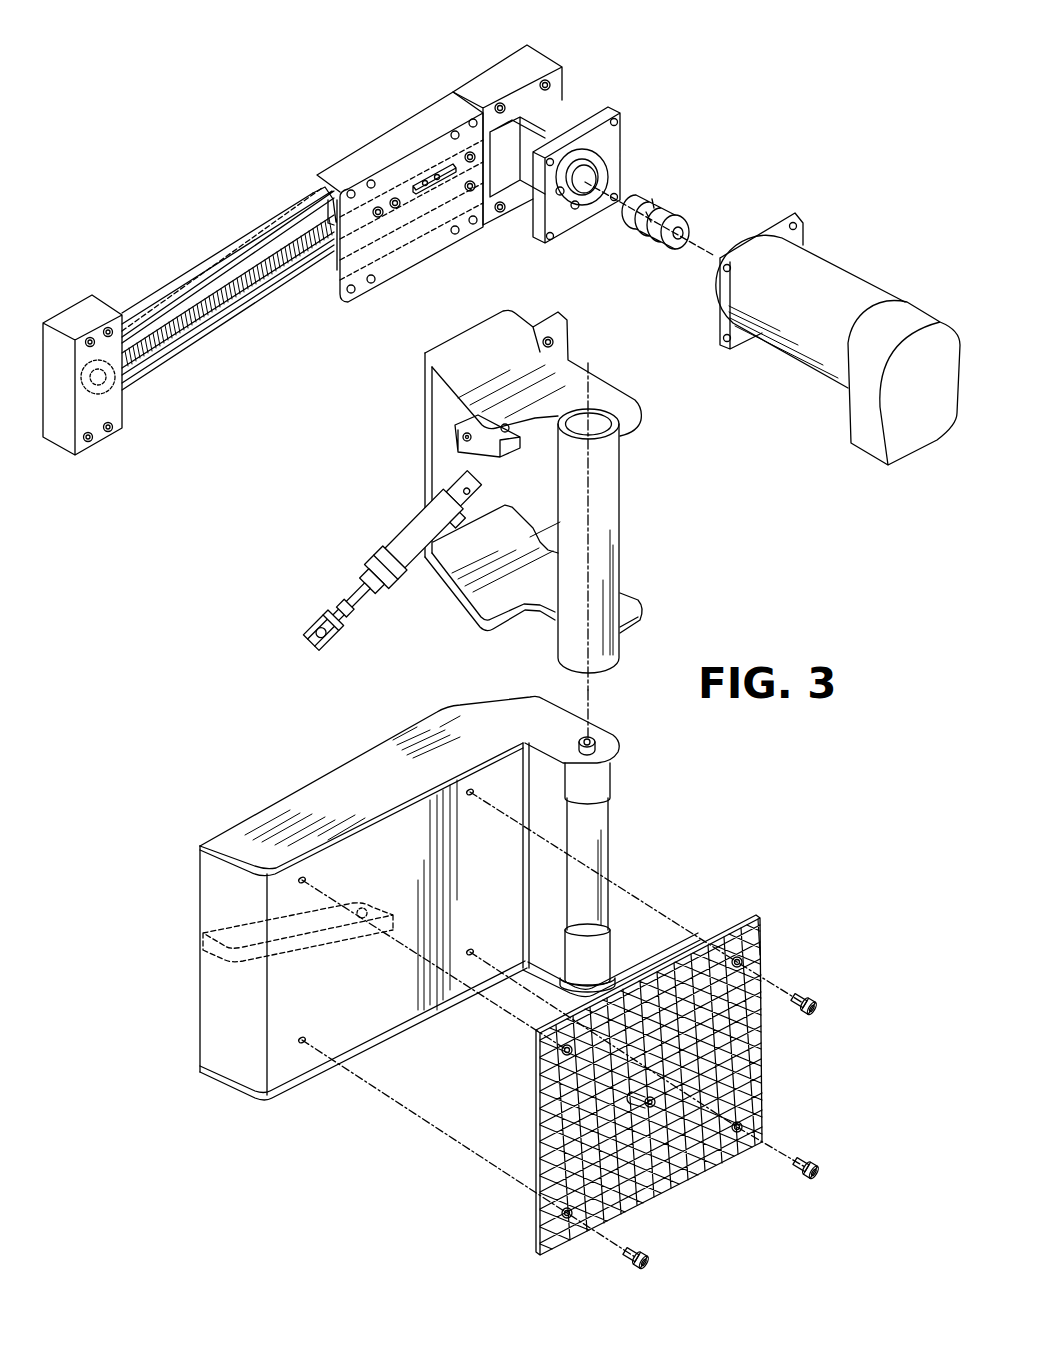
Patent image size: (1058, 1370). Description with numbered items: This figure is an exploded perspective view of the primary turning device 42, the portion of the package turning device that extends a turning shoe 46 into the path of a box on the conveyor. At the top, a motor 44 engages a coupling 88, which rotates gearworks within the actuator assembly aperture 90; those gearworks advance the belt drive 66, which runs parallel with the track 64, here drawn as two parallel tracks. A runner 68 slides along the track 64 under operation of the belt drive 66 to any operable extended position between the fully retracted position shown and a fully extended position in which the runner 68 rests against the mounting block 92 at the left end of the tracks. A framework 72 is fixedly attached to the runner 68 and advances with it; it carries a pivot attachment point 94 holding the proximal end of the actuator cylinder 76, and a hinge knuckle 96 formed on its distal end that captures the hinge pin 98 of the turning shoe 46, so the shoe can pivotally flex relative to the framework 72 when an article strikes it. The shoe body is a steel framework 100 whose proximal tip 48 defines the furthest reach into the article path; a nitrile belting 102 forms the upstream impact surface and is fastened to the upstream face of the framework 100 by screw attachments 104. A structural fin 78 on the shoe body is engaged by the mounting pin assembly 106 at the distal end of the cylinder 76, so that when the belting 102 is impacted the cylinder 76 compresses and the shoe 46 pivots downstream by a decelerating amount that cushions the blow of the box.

The primary turning device 42 is at (501, 247).
The motor 44 is at (852, 268).
The turning shoe 46 is at (490, 980).
The tip of turning shoe 48 is at (388, 909).
The track 64 is at (213, 247).
The belt drive 66 is at (227, 323).
The runner 68 is at (378, 127).
The framework 72 is at (552, 500).
The actuator cylinder 76 is at (358, 556).
The structural fin 78 is at (205, 936).
The coupling 88 is at (678, 200).
The actuator assembly aperture 90 is at (598, 170).
The mounting block 92 is at (66, 307).
The pivot attachment point 94 is at (507, 468).
The hinge knuckle 96 is at (621, 527).
The hinge pin 98 is at (609, 853).
The framework of turning shoe 100 is at (392, 1033).
The nitrile belting 102 is at (661, 1202).
The screw attachments 104 is at (806, 993).
The mounting pin assembly 106 is at (312, 630).